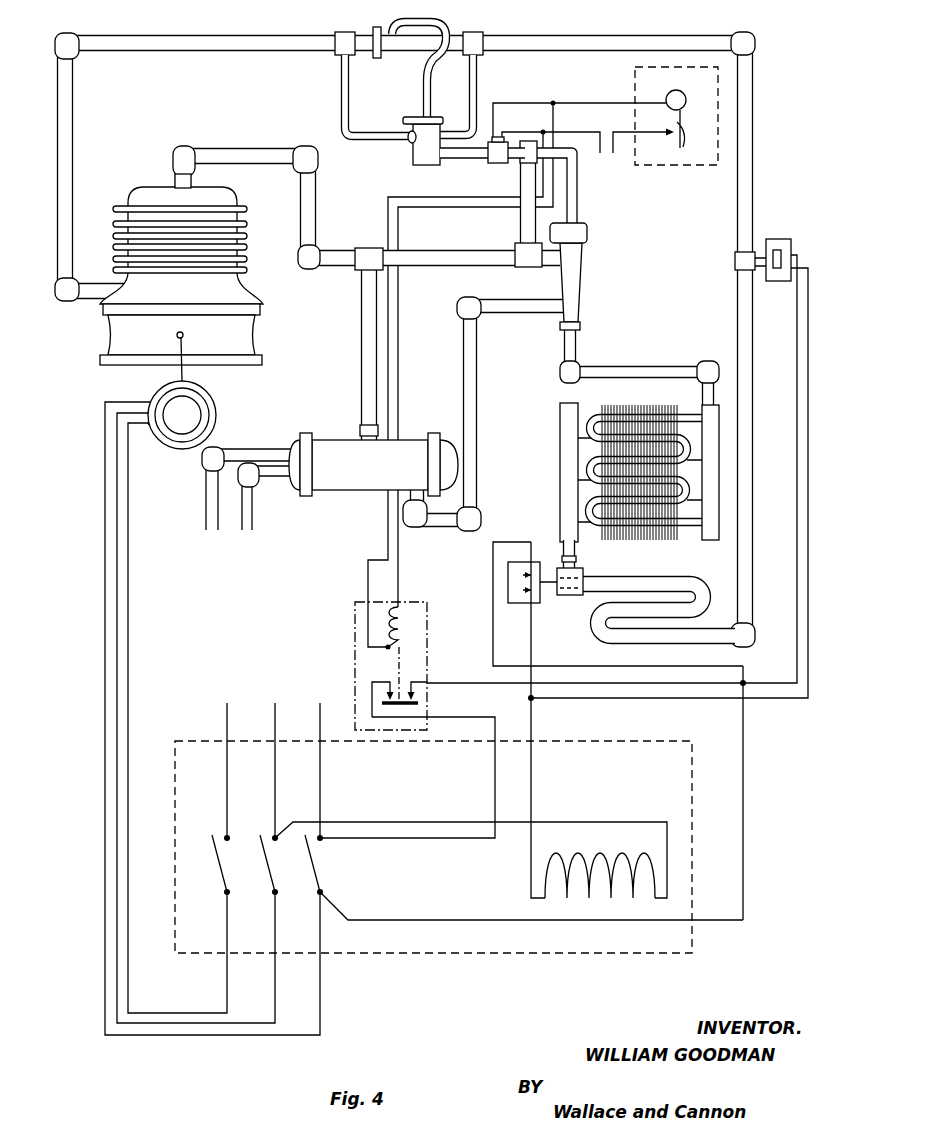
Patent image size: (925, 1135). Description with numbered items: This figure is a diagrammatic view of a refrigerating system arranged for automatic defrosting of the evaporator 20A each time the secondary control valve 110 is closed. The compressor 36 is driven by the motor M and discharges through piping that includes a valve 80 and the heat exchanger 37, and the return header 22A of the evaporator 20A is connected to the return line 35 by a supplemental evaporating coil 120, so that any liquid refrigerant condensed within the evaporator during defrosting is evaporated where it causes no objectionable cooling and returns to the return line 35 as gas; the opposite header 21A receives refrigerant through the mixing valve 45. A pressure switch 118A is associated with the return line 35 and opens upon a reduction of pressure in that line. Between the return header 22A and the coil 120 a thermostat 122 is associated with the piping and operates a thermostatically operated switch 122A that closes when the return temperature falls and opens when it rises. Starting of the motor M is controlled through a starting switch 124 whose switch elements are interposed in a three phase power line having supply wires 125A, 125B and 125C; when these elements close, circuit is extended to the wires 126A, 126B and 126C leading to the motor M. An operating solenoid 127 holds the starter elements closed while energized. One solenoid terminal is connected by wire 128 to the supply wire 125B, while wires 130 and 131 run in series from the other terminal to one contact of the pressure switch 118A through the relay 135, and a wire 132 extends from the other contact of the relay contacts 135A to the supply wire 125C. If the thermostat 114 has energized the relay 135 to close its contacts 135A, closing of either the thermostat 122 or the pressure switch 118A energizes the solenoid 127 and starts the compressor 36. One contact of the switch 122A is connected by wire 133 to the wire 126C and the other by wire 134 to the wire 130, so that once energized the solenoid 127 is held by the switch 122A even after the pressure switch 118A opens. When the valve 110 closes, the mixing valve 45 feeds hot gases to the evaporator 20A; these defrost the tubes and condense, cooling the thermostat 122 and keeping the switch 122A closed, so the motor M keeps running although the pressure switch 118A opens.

The compressor 36 is at (248, 240).
The pressure regulating valve 80 is at (412, 153).
The secondary control valve 110 is at (497, 164).
The thermostat 114 is at (607, 116).
The return line 35 is at (740, 218).
The pressure switch 118A is at (775, 239).
The mixing valve 45 is at (580, 268).
The evaporator 20A is at (622, 406).
The return header 22A is at (561, 433).
The outlet header 21A is at (709, 541).
The supplemental evaporating coil 120 is at (627, 578).
The thermostatically operated switch 122A is at (507, 583).
The thermostat 122 is at (553, 598).
The wire 134 is at (532, 652).
The relay 135 is at (350, 632).
The relay contacts 135A is at (432, 697).
The supply wire 125A is at (227, 712).
The supply wire 125B is at (277, 697).
The supply wire 125C is at (342, 697).
The wire 130 is at (534, 781).
The wire 132 is at (495, 787).
The wire 128 is at (573, 822).
The operating solenoid 127 is at (588, 898).
The wire 133 is at (500, 923).
The wire 131 is at (755, 703).
The starting switch 124 is at (468, 961).
The wire 126A is at (227, 984).
The wire 126B is at (252, 1025).
The wire 126C is at (320, 998).
The heat exchanger 37 is at (357, 483).
The motor M is at (217, 406).